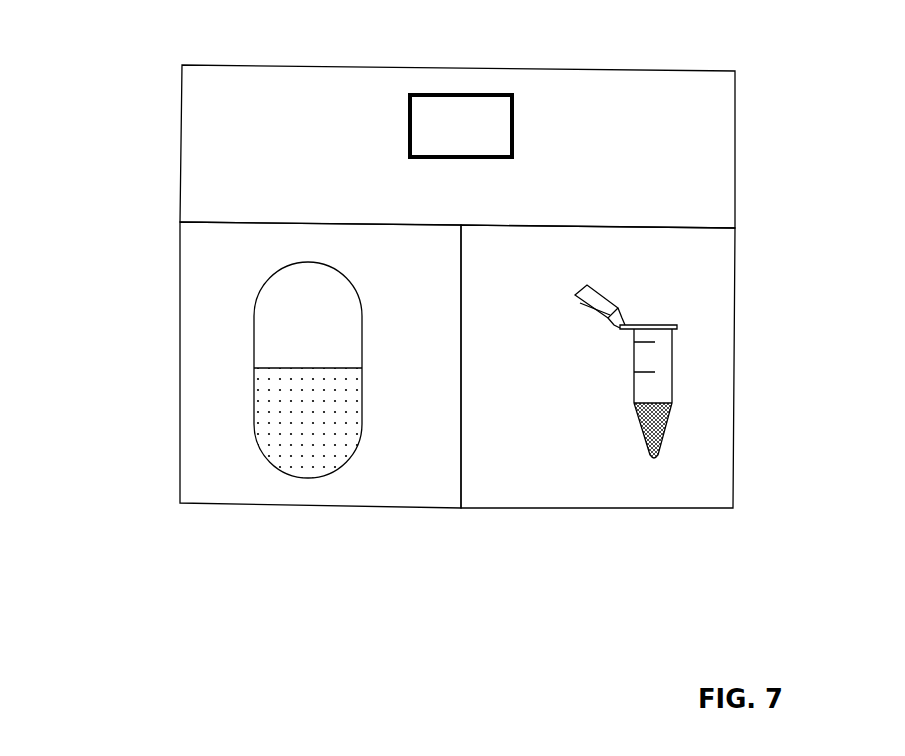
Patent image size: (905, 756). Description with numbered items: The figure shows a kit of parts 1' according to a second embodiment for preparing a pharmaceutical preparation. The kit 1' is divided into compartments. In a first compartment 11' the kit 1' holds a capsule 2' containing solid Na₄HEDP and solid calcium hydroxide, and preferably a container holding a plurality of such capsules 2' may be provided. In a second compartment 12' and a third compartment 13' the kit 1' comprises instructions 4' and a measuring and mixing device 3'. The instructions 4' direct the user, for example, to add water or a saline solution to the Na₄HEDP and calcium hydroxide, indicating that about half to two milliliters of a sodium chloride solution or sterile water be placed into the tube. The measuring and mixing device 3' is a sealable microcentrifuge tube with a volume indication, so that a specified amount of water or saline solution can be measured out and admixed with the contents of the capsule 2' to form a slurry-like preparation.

The kit of parts 1' is at (436, 304).
The capsule 2' is at (249, 370).
The measuring and mixing device 3' is at (626, 446).
The instructions 4' is at (483, 87).
The first compartment 11' is at (320, 399).
The second compartment 12' is at (491, 146).
The third compartment 13' is at (620, 389).